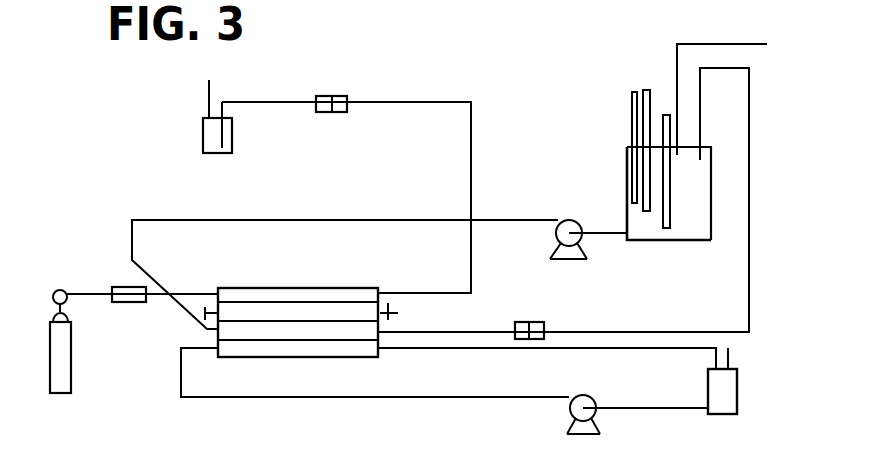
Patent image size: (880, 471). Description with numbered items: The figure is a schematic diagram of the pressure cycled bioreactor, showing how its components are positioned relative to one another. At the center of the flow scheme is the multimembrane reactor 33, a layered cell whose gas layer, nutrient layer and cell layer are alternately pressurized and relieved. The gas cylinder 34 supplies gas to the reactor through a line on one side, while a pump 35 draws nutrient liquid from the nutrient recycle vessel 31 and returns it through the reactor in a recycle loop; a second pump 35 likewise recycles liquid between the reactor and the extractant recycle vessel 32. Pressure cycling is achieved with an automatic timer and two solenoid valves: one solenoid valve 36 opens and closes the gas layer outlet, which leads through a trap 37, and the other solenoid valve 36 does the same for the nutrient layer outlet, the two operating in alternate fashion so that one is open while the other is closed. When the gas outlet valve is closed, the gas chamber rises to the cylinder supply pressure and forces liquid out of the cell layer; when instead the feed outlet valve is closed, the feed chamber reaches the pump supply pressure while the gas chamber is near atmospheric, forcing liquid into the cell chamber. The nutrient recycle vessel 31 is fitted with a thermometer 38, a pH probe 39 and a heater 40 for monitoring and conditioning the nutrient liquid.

The nutrient recycle vessel 31 is at (669, 208).
The extractant recycle vessel 32 is at (736, 391).
The multimembrane reactor 33 is at (301, 336).
The gas cylinder 34 is at (77, 341).
The pump 35 is at (575, 314).
The solenoid valve 36 is at (431, 206).
The trap 37 is at (202, 116).
The thermometer 38 is at (617, 146).
The pH probe 39 is at (601, 120).
The heater 40 is at (668, 103).